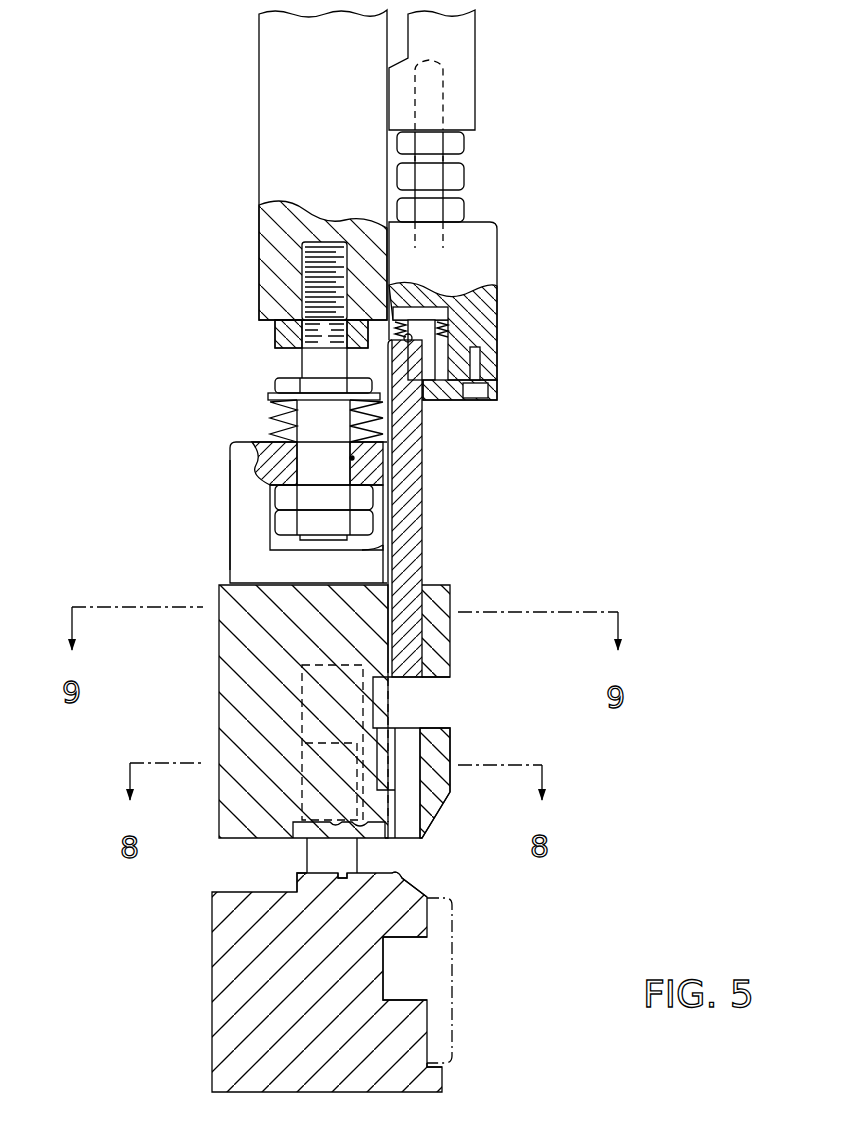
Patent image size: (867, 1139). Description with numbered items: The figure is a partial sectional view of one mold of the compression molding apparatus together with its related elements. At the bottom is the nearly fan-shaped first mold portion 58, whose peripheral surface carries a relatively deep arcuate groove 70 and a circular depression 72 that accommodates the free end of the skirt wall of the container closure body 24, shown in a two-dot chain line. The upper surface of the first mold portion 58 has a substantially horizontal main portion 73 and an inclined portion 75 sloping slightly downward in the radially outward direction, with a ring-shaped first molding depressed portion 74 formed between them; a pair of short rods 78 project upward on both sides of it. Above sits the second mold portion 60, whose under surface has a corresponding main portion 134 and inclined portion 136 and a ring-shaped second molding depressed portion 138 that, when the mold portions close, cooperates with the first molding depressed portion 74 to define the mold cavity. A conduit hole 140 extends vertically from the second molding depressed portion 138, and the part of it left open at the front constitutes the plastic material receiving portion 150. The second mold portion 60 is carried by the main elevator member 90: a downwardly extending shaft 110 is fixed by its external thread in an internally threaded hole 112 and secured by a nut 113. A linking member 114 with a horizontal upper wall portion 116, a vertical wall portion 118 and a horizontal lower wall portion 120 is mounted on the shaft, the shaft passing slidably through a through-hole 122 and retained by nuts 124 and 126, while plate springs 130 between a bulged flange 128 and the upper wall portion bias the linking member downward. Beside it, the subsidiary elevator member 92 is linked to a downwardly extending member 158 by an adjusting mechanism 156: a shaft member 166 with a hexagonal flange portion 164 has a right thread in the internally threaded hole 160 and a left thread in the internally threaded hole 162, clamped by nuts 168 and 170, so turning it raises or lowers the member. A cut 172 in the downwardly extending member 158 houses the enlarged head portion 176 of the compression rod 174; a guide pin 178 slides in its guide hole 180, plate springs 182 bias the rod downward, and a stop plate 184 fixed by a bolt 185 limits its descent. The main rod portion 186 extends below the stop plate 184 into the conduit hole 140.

The container closure body 24 is at (461, 934).
The first mold portion 58 is at (451, 1078).
The second mold portion 60 is at (453, 637).
The groove 70 is at (413, 975).
The circular depression 72 is at (443, 1052).
The main portion 73 is at (299, 880).
The first molding depressed portion 74 is at (351, 872).
The inclined portion 75 is at (413, 890).
The short rods 78 is at (301, 845).
The main elevator member 90 is at (257, 100).
The subsidiary elevator member 92 is at (483, 52).
The downwardly extending shaft 110 is at (324, 349).
The internally threaded hole 112 is at (303, 280).
The nut 113 is at (275, 335).
The linking member 114 is at (228, 472).
The horizontal upper wall portion 116 is at (285, 442).
The vertical wall portion 118 is at (237, 520).
The horizontal lower wall portion 120 is at (385, 548).
The through-hole 122 is at (355, 458).
The nut 124 is at (375, 496).
The nut 126 is at (375, 521).
The bulged flange 128 is at (268, 388).
The plate springs 130 is at (287, 426).
The main portion 134 is at (330, 825).
The inclined portion 136 is at (441, 840).
The second molding depressed portion 138 is at (441, 790).
The conduit hole 140 is at (412, 744).
The plastic material receiving portion 150 is at (448, 762).
The adjusting mechanism 156 is at (487, 166).
The downwardly extending member 158 is at (500, 273).
The internally threaded hole 160 is at (447, 90).
The internally threaded hole 162 is at (453, 243).
The hexagonal flange portion 164 is at (465, 181).
The shaft member 166 is at (450, 160).
The nut 168 is at (465, 143).
The nut 170 is at (465, 208).
The cut 172 is at (441, 310).
The compression rod 174 is at (425, 560).
The enlarged head portion 176 is at (457, 352).
The guide pin 178 is at (441, 396).
The guide hole 180 is at (456, 331).
The plate springs 182 is at (468, 327).
The stop plate 184 is at (431, 410).
The bolt 185 is at (482, 385).
The main rod portion 186 is at (429, 588).